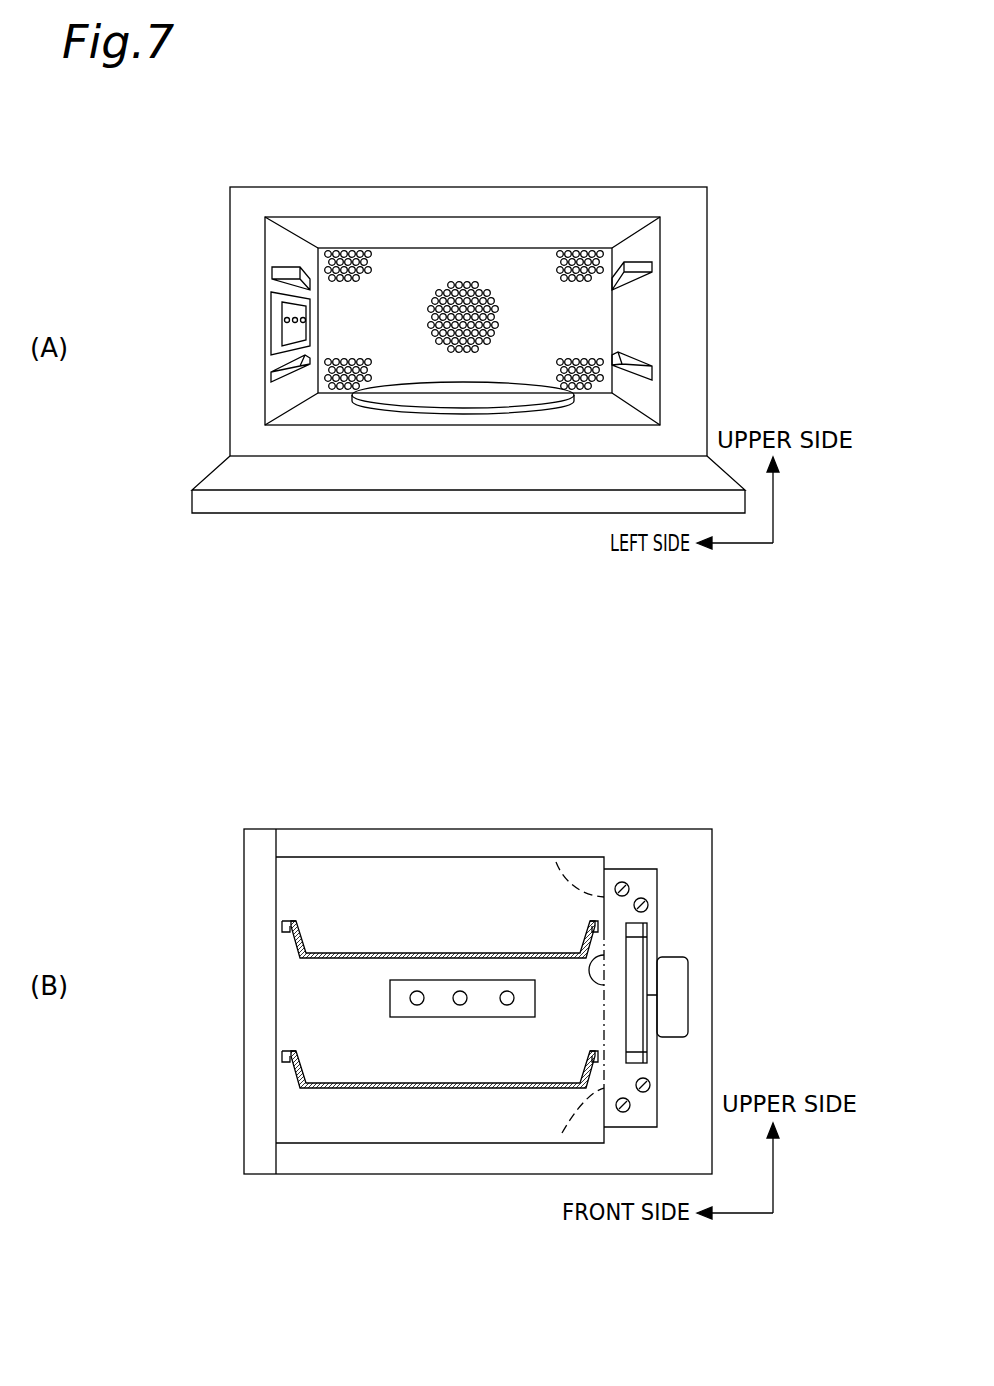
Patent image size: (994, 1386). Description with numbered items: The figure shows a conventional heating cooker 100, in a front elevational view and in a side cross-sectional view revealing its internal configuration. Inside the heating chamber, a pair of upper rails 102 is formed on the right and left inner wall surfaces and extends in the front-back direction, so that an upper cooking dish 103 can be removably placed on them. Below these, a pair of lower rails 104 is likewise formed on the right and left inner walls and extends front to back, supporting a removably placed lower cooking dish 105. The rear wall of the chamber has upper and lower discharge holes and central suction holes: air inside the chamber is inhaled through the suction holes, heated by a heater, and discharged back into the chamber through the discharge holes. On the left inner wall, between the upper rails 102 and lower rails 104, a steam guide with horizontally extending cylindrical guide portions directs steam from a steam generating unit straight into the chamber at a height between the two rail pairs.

The heating cooker 100 is at (656, 165).
The upper rails 102 is at (276, 270).
The upper cooking dish 103 is at (333, 919).
The lower rails 104 is at (278, 382).
The lower cooking dish 105 is at (326, 1049).